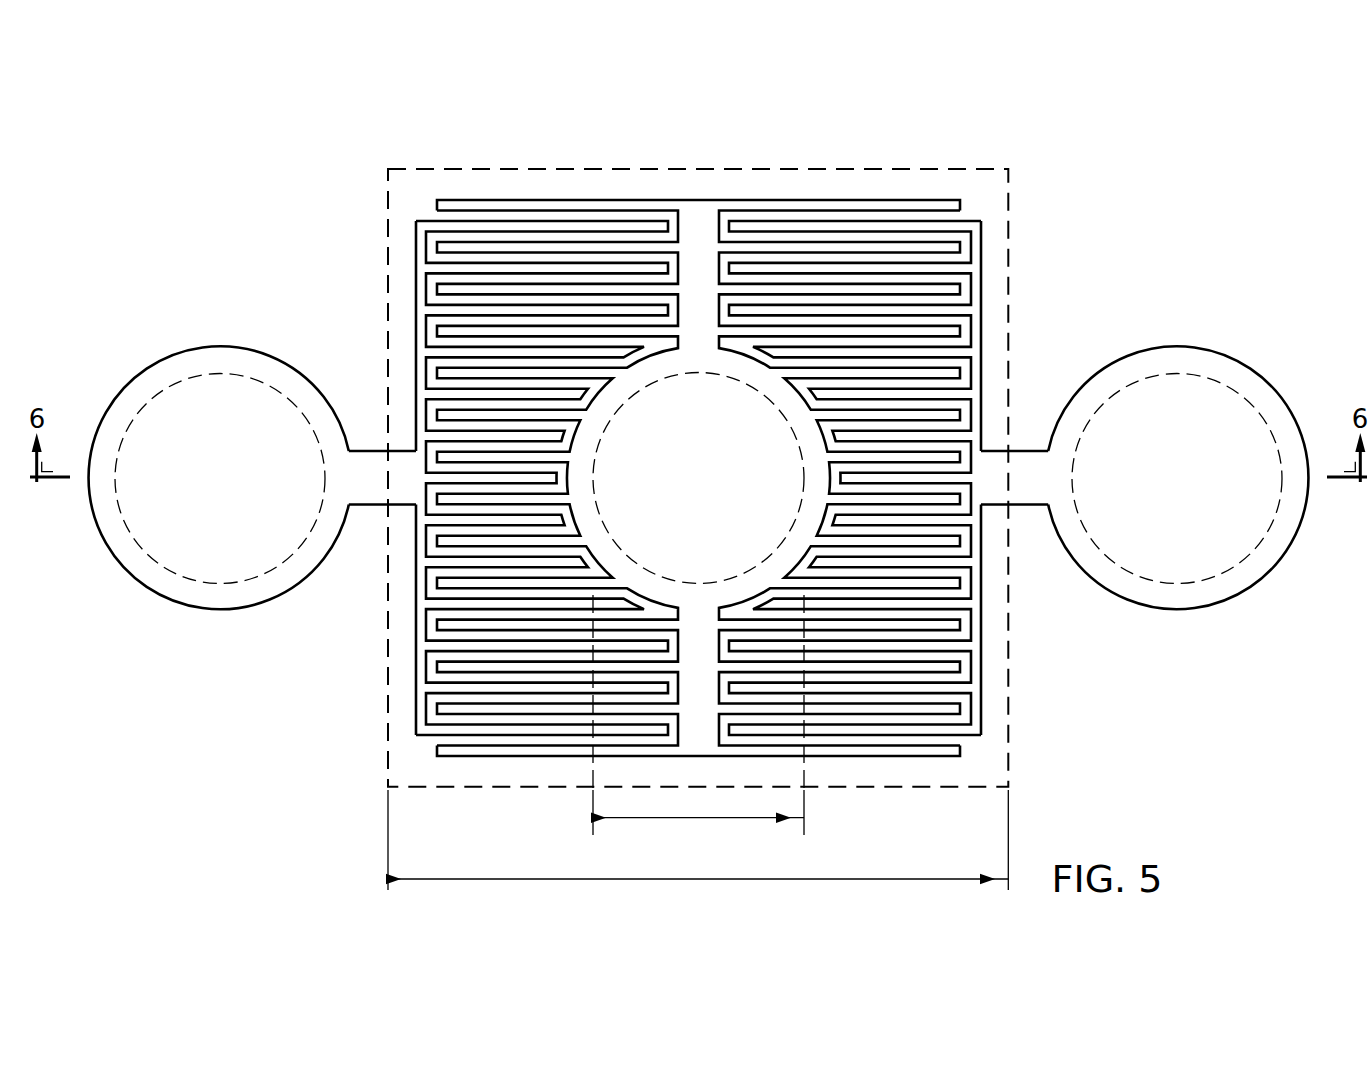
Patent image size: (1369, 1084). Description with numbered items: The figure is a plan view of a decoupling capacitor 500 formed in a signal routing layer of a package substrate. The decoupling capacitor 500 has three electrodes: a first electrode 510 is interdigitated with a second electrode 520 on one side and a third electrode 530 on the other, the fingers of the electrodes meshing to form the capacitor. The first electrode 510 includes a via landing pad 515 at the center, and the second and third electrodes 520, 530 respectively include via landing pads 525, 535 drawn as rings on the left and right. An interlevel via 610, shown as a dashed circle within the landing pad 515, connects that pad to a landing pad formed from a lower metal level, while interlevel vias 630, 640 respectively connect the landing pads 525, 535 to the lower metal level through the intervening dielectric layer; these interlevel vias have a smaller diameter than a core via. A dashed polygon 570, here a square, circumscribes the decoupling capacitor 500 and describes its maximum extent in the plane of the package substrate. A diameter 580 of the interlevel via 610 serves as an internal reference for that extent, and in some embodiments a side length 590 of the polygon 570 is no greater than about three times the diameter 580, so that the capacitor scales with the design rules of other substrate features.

The decoupling capacitor 500 is at (383, 141).
The first electrode 510 is at (694, 197).
The via landing pad 515 is at (676, 491).
The second electrode 520 is at (408, 356).
The via landing pad 525 is at (163, 355).
The third electrode 530 is at (989, 355).
The via landing pad 535 is at (1252, 366).
The polygon 570 is at (870, 166).
The diameter 580 is at (700, 821).
The side length 590 is at (700, 883).
The interlevel via 610 is at (696, 374).
The interlevel via 630 is at (217, 583).
The interlevel via 640 is at (1178, 583).